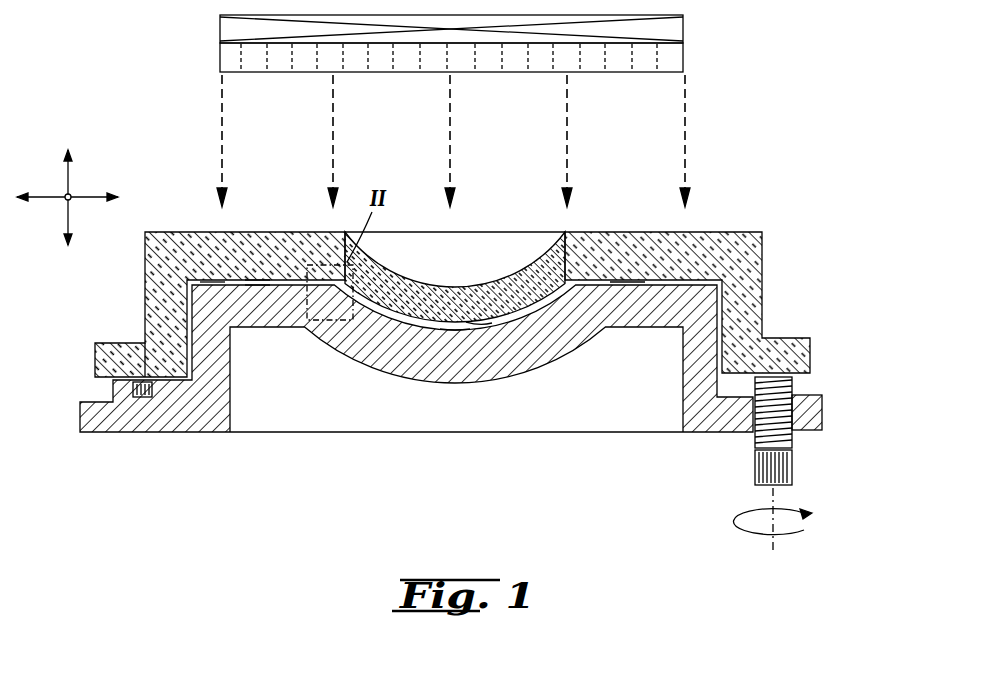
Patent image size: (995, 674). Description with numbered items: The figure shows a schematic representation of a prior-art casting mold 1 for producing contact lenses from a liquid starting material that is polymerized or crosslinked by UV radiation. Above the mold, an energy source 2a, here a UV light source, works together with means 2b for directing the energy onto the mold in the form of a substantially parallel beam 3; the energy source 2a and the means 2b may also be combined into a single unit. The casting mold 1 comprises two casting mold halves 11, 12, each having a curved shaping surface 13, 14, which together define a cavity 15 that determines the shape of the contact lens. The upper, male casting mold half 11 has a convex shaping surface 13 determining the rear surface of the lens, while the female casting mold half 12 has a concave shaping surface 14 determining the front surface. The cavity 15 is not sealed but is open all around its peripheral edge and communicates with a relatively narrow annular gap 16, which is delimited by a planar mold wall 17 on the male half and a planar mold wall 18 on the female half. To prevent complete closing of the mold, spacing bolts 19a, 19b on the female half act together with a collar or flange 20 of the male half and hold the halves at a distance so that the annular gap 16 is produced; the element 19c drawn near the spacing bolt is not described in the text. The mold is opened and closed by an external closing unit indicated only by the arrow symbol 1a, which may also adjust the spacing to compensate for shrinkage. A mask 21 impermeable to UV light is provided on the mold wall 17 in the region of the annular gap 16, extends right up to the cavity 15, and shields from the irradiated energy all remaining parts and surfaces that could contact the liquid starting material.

The casting mold 1 is at (789, 189).
The arrow symbol (closing unit) 1a is at (70, 195).
The energy source 2a is at (683, 28).
The means for directing the energy 2b is at (676, 58).
The parallel beam 3 is at (222, 148).
The male casting mold half 11 is at (160, 296).
The female casting mold half 12 is at (222, 383).
The shaping surface 13 is at (433, 318).
The shaping surface 14 is at (457, 333).
The cavity 15 is at (479, 326).
The annular gap 16 is at (213, 280).
The planar mold wall 17 is at (257, 282).
The planar mold wall 18 is at (258, 288).
The spacing bolt 19a is at (113, 388).
The spacing bolt 19b is at (782, 467).
The rotation direction 19c is at (797, 530).
The collar or flange 20 is at (110, 357).
The mask 21 is at (628, 281).